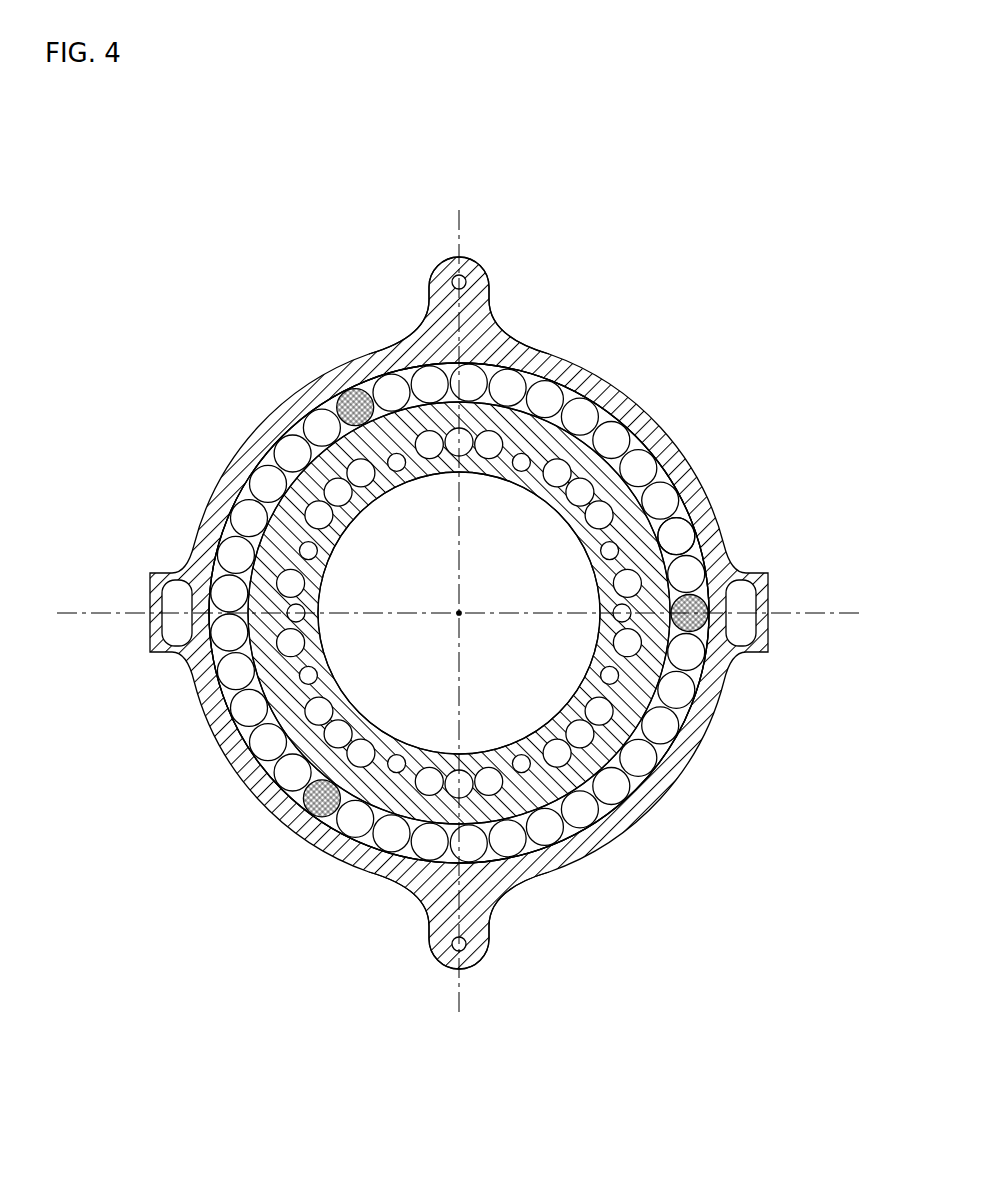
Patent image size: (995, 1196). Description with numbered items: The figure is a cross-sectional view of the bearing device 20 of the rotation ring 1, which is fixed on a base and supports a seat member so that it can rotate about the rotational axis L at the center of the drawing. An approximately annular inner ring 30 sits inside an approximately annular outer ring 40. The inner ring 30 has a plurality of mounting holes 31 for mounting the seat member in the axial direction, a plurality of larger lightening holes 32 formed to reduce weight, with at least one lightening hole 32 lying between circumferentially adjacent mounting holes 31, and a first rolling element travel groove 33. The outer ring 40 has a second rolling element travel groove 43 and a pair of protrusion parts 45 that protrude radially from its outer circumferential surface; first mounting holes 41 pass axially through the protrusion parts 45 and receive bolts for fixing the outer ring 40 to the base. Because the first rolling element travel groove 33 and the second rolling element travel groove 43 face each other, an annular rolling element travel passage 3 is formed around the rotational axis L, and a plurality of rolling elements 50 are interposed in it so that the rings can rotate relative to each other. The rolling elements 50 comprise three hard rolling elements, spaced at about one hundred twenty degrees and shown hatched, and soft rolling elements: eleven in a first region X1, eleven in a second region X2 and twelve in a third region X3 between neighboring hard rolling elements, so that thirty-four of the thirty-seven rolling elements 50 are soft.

The rotation ring 1 is at (207, 245).
The rolling element travel passage 3 is at (580, 845).
The bearing device 20 is at (290, 370).
The inner ring 30 is at (560, 400).
The mounting holes 31 is at (313, 549).
The lightening holes 32 is at (297, 585).
The first rolling element travel groove 33 is at (596, 572).
The outer ring 40 is at (573, 372).
The first mounting holes 41 is at (464, 279).
The second rolling element travel groove 43 is at (678, 532).
The protrusion parts 45 is at (432, 268).
The rolling elements 50 is at (352, 387).
The rotational axis L is at (462, 617).
The first region X1 is at (240, 488).
The second region X2 is at (643, 432).
The third region X3 is at (650, 800).